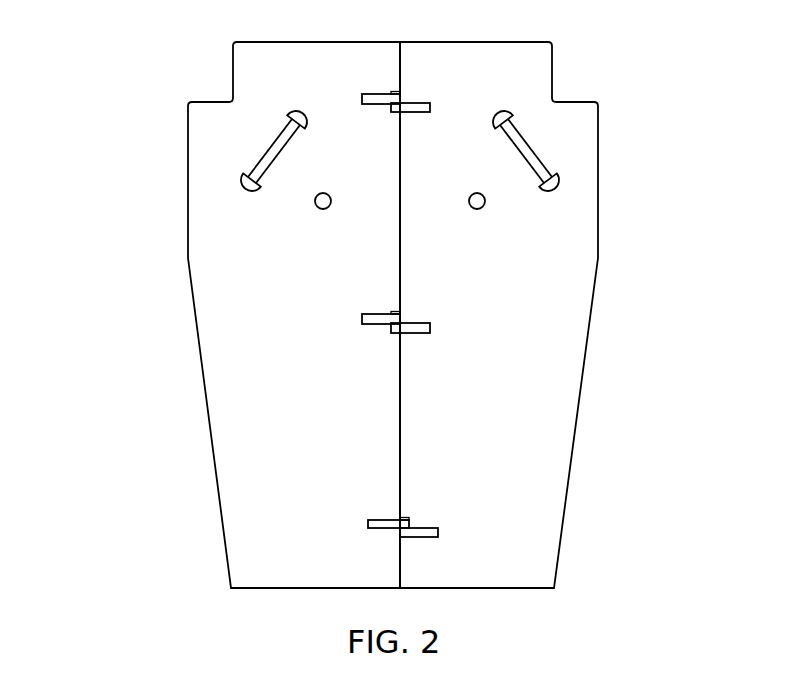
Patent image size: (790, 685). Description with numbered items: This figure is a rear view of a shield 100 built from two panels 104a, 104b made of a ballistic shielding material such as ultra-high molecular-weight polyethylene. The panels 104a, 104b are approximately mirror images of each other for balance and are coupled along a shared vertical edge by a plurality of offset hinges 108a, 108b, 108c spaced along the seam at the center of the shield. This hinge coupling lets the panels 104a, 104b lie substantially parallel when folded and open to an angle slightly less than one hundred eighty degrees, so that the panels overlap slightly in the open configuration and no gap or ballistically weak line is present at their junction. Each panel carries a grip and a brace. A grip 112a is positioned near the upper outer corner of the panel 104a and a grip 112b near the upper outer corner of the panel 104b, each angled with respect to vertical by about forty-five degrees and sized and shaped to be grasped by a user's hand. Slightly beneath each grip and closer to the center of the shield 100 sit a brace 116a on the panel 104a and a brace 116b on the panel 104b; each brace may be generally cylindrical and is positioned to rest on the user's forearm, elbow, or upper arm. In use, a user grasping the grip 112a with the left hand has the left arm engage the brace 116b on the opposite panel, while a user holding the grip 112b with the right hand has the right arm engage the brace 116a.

The shield 100 is at (168, 44).
The panel 104a is at (263, 565).
The panel 104b is at (512, 573).
The offset hinge 108a is at (430, 106).
The offset hinge 108b is at (430, 328).
The offset hinge 108c is at (368, 524).
The grip 112a is at (537, 155).
The grip 112b is at (260, 163).
The brace 116a is at (485, 202).
The brace 116b is at (314, 203).